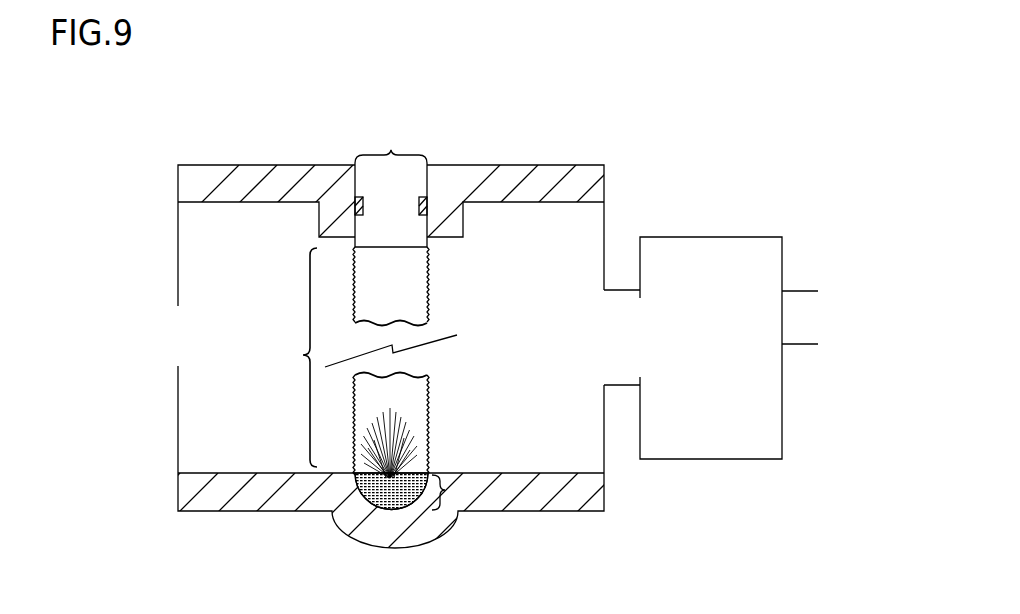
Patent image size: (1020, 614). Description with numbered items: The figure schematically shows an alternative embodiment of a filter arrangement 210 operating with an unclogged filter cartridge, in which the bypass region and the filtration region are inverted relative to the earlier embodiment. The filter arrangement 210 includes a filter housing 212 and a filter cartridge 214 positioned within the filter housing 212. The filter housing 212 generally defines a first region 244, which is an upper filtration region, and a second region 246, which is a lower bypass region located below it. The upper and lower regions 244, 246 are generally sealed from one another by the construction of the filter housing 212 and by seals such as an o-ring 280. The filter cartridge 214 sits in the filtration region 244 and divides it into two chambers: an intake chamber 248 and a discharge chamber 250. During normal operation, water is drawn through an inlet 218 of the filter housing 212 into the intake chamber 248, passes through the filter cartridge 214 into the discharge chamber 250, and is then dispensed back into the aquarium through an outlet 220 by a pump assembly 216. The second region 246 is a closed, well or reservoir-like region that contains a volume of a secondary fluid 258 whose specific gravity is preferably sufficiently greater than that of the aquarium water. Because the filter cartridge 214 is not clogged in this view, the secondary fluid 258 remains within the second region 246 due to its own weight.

The filter arrangement 210 is at (345, 319).
The filter housing 212 is at (252, 164).
The filter cartridge 214 is at (410, 288).
The pump assembly 216 is at (690, 237).
The inlet 218 is at (144, 373).
The outlet 220 is at (833, 288).
The first region 244 is at (438, 392).
The second region 246 is at (445, 490).
The intake chamber 248 is at (255, 416).
The discharge chamber 250 is at (545, 336).
The secondary fluid 258 is at (423, 473).
The o-ring 280 is at (422, 207).